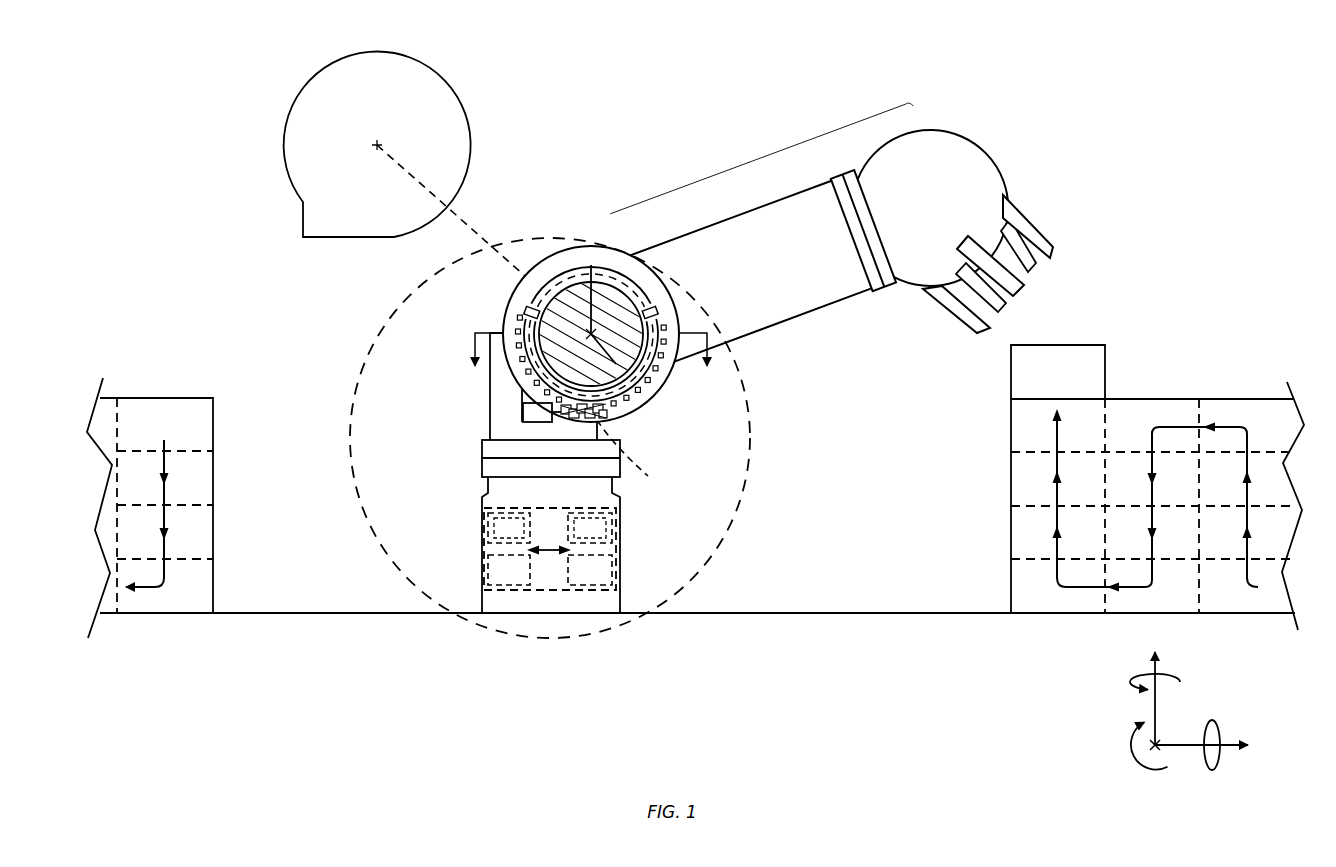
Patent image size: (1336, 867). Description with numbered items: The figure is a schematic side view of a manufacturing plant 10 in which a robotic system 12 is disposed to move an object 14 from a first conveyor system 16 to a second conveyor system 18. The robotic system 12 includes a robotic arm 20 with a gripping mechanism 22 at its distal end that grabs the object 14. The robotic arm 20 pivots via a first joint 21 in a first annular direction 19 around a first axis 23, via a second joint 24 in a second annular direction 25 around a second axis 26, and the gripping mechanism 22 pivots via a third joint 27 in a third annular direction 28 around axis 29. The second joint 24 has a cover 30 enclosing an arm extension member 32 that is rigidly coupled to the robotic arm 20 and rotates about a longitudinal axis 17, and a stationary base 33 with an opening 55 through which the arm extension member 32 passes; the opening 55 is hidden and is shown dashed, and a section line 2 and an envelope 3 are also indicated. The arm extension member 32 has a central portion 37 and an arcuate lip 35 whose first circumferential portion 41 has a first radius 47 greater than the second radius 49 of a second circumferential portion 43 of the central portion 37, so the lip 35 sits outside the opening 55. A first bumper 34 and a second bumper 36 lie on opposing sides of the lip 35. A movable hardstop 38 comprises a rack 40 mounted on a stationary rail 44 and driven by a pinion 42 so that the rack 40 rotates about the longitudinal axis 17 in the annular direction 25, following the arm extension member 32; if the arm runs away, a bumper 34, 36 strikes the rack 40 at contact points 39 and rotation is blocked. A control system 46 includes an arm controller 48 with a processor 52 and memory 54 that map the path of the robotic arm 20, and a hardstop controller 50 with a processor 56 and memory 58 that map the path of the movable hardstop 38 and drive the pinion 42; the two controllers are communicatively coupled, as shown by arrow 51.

The section line 2- 2 is at (591, 361).
The rotation envelope 3 is at (750, 452).
The manufacturing plant 10 is at (988, 36).
The robotic system 12 is at (773, 118).
The object 14 is at (1078, 346).
The conveyor system 16 is at (1209, 356).
The longitudinal axis 17 is at (530, 392).
The conveyor system 18 is at (165, 388).
The first annular direction 19 is at (1178, 672).
The robotic arm 20 is at (722, 170).
The first joint 21 is at (481, 458).
The gripping mechanism 22 is at (1003, 152).
The first axis 23 is at (1150, 661).
The second joint 24 is at (527, 261).
The second annular direction 25 is at (1132, 750).
The second axis 26 is at (1151, 769).
The third joint 27 is at (893, 293).
The third annular direction 28 is at (1217, 724).
The axis 29 is at (1236, 760).
The cover 30 is at (436, 72).
The arm extension member 32 is at (650, 376).
The stationary base 33 is at (534, 280).
The first bumper 34 is at (652, 300).
The lip 35 is at (576, 283).
The second bumper 36 is at (529, 312).
The central portion 37 is at (586, 280).
The movable hardstop 38 is at (633, 396).
The contact points 39 is at (517, 318).
The rack 40 is at (647, 395).
The first circumferential portion 41 is at (540, 272).
The pinion 42 is at (566, 423).
The second circumferential portion 43 is at (528, 336).
The rail 44 is at (596, 413).
The control system 46 is at (619, 541).
The first radius 47 is at (612, 278).
The arm controller 48 is at (600, 590).
The second radius 49 is at (617, 398).
The hardstop controller 50 is at (508, 590).
The arrow 51 is at (553, 556).
The processor 52 is at (603, 528).
The memory 54 is at (603, 568).
The opening 55 is at (634, 451).
The processor 56 is at (497, 528).
The memory 58 is at (497, 568).